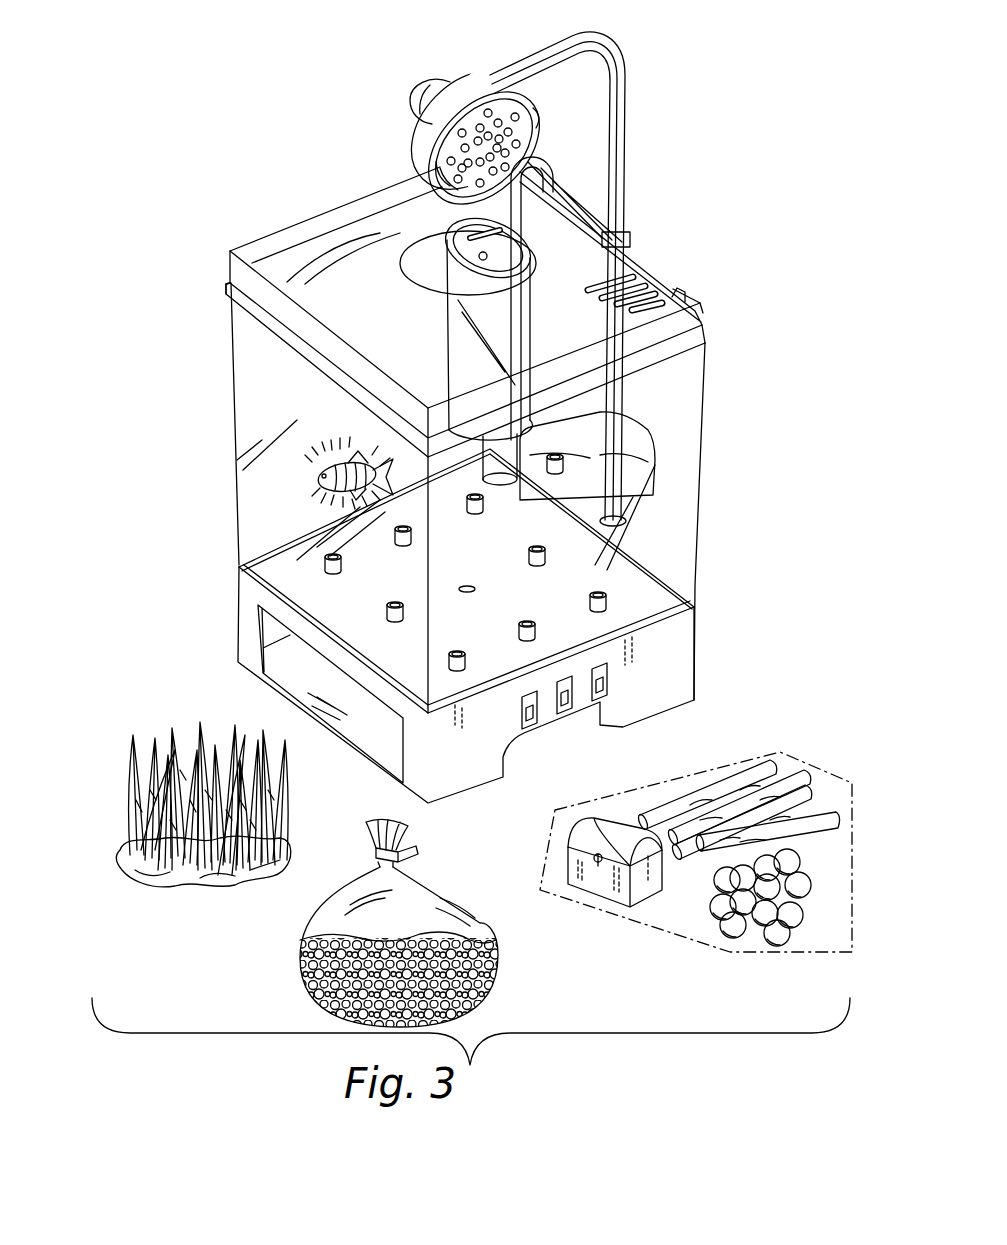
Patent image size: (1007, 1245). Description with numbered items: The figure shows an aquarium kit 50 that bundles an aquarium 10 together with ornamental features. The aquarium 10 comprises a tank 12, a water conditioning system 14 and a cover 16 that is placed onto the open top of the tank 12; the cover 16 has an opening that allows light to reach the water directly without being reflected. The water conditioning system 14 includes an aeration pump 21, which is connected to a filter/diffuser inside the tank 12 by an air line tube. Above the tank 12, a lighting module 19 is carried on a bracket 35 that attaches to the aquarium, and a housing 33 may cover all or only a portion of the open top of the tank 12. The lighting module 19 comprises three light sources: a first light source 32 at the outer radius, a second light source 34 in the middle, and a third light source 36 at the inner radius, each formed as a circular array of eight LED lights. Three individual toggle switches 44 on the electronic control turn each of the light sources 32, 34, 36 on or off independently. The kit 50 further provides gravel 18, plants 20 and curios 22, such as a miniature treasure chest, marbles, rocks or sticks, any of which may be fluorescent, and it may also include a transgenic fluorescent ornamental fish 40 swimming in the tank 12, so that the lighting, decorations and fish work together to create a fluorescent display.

The aquarium 10 is at (216, 328).
The tank 12 is at (233, 442).
The water conditioning system 14 is at (440, 320).
The cover 16 is at (307, 211).
The gravel 18 is at (487, 918).
The lighting module 19 is at (424, 104).
The plants 20 is at (140, 793).
The aeration pump 21 is at (648, 442).
The curios 22 is at (553, 831).
The first light source 32 is at (497, 92).
The housing 33 is at (228, 257).
The second light source 34 is at (476, 122).
The bracket 35 is at (626, 172).
The third light source 36 is at (418, 169).
The transgenic fluorescent ornamental fish 40 is at (322, 490).
The toggle switches 44 is at (528, 727).
The aquarium kit 50 is at (116, 606).